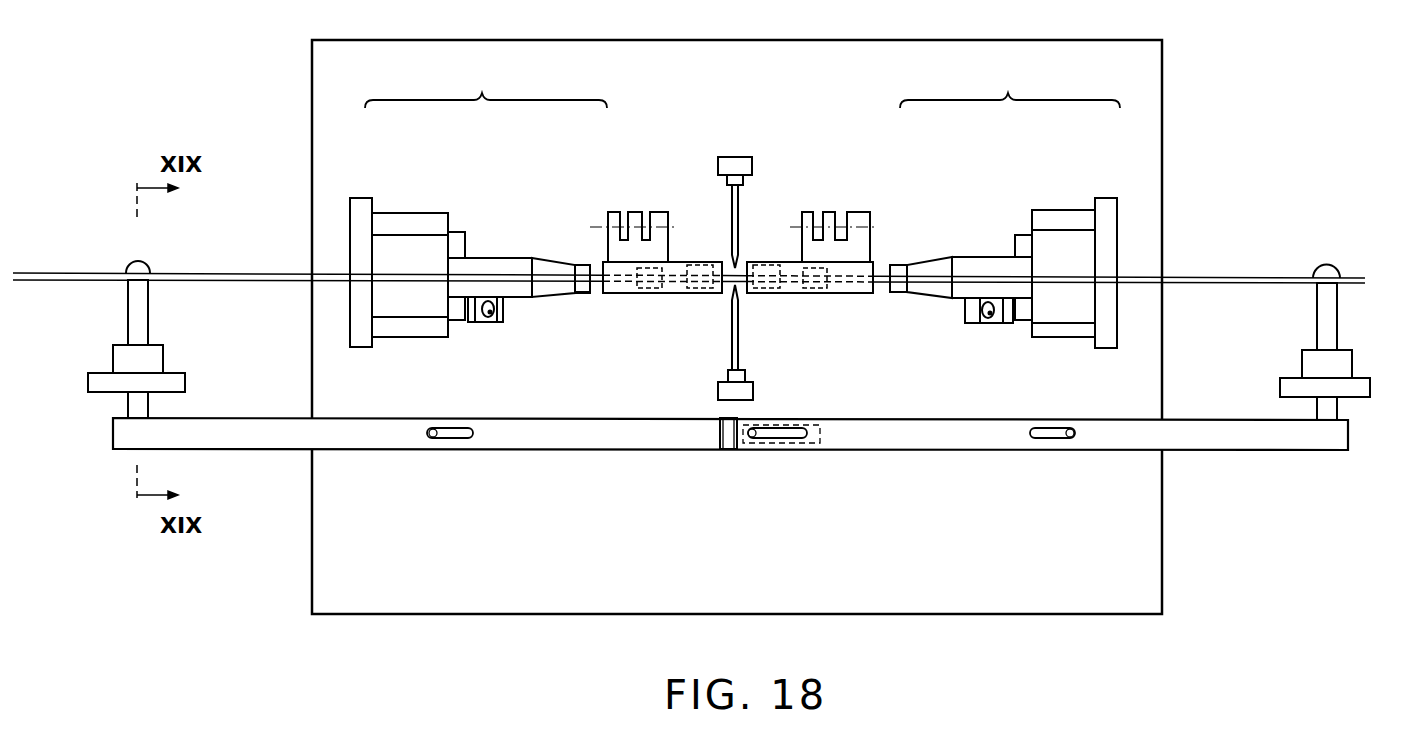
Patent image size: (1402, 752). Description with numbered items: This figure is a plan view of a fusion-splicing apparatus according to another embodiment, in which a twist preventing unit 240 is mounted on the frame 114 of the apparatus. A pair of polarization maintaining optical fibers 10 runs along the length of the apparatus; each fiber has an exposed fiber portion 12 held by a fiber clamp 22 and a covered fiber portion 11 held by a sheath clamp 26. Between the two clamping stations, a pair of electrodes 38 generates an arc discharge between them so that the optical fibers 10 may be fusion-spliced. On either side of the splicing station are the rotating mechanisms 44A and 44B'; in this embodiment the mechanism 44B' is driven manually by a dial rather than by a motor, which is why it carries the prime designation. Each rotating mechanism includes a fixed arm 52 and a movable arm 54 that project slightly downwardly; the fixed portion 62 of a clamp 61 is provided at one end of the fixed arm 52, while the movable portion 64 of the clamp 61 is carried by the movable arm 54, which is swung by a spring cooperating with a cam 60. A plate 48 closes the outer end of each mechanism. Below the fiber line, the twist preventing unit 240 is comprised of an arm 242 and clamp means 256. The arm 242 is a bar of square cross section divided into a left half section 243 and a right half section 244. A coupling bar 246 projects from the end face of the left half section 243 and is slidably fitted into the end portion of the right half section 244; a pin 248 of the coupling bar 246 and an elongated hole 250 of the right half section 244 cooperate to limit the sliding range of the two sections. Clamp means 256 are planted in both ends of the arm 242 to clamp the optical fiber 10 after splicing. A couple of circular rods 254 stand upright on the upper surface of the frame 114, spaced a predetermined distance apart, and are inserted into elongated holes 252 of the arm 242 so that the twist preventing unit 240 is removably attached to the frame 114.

The polarization maintaining optical fiber 10 is at (228, 273).
The covered fiber portion 11 is at (655, 294).
The exposed fiber portion 12 is at (693, 265).
The fiber clamp 22 is at (700, 293).
The sheath clamp 26 is at (647, 290).
The electrode 38 is at (731, 211).
The rotating mechanism 44A is at (1010, 200).
The rotating mechanism 44B' is at (734, 220).
The end plate 48 is at (362, 198).
The fixed arm 52 is at (497, 258).
The movable arm 54 is at (520, 300).
The cam 60 is at (488, 323).
The clamp 61 is at (588, 294).
The fixed portion 62 is at (581, 265).
The movable portion 64 is at (575, 292).
The frame 114 is at (1140, 90).
The twist preventing unit 240 is at (729, 382).
The arm 242 is at (255, 450).
The left half section 243 is at (647, 450).
The right half section 244 is at (897, 450).
The coupling bar 246 is at (737, 450).
The pin 248 is at (760, 428).
The elongated hole 250 is at (793, 440).
The elongated hole 252 is at (468, 440).
The circular rod 254 is at (432, 440).
The clamp means 256 is at (158, 316).